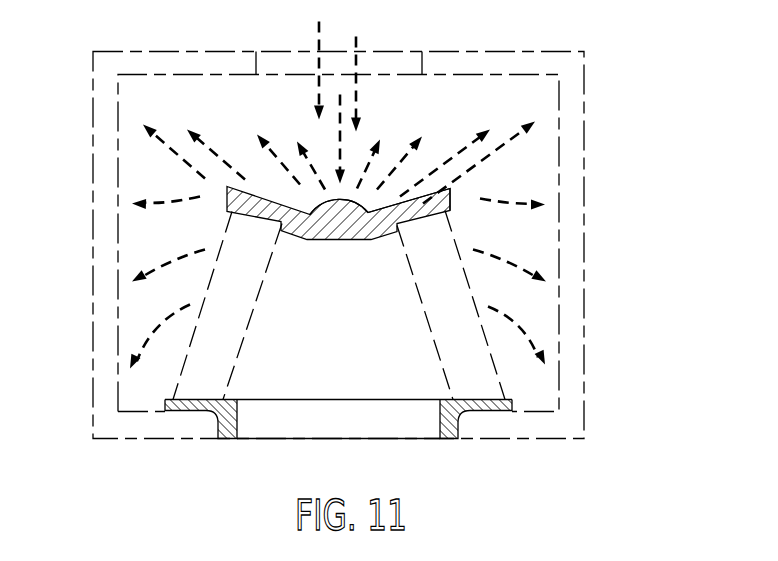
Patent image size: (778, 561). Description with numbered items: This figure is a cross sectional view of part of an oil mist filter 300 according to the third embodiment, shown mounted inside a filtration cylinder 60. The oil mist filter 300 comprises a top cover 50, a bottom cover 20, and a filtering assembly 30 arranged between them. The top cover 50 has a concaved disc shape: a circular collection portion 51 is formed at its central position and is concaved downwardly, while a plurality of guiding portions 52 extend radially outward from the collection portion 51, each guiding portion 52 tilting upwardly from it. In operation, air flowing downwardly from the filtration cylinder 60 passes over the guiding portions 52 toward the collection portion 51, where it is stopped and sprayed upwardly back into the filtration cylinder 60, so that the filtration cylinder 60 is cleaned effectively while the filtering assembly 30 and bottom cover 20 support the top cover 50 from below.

The bottom cover 20 is at (247, 413).
The filtering assembly 30 is at (170, 376).
The oil mist filter 300 is at (518, 375).
The top cover 50 is at (277, 203).
The collection portion 51 is at (332, 200).
The guiding portion 52 is at (413, 193).
The filtration cylinder 60 is at (598, 180).